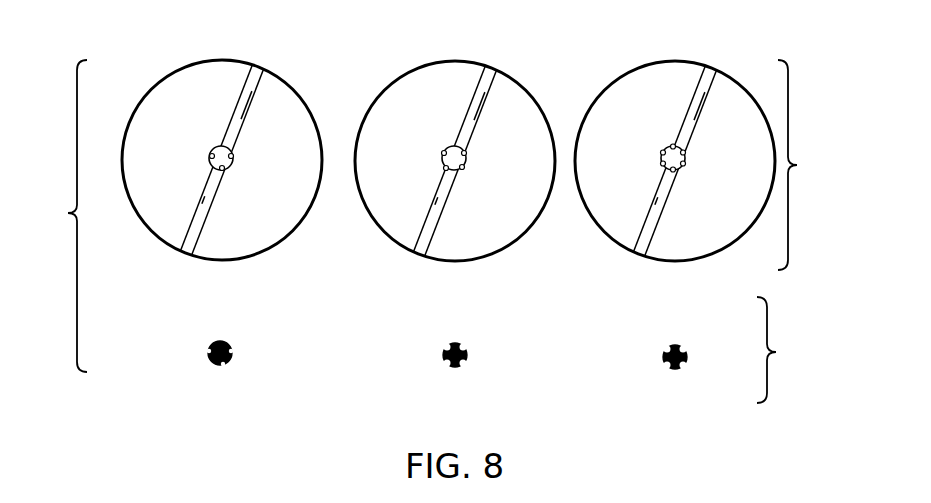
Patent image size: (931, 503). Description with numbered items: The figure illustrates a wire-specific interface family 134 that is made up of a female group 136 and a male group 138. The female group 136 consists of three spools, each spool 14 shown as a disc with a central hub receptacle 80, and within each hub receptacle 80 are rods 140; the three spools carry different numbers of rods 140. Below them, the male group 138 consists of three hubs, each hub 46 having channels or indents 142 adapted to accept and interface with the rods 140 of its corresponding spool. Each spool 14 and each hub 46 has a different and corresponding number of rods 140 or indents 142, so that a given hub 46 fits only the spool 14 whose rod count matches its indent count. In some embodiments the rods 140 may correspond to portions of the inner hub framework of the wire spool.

The spool 14 is at (204, 57).
The hub receptacle 80 is at (209, 146).
The rods 140 is at (208, 155).
The hub 46 is at (212, 334).
The channels or indents 142 is at (233, 349).
The family 134 is at (68, 213).
The female group 136 is at (800, 165).
The male group 138 is at (780, 352).